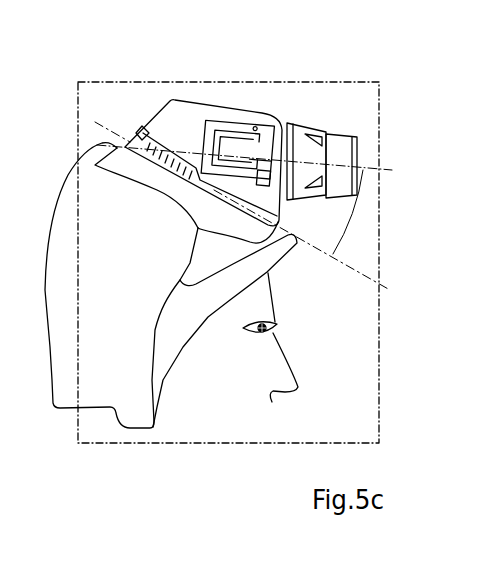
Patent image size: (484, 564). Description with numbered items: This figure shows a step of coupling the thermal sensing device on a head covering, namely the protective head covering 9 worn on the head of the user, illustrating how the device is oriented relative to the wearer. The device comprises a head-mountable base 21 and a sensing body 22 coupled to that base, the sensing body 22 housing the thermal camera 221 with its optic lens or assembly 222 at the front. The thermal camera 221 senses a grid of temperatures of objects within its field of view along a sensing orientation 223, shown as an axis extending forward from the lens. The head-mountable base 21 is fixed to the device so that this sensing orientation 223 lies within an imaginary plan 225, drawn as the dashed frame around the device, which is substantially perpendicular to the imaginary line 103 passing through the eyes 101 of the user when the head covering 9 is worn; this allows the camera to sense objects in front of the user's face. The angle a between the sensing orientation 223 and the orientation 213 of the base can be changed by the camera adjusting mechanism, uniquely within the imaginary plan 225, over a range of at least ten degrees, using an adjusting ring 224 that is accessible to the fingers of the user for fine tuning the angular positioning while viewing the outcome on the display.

The protective head covering 9 is at (95, 388).
The head-mountable base 21 is at (122, 163).
The sensing body 22 is at (167, 118).
The thermal camera 221 is at (232, 140).
The optic lens or assembly 222 is at (337, 147).
The sensing orientation 223 is at (388, 170).
The adjusting ring 224 is at (303, 133).
The imaginary plan 225 is at (150, 445).
The orientation of the base 213 is at (363, 277).
The eye 101 is at (259, 333).
The imaginary line 103 is at (275, 337).